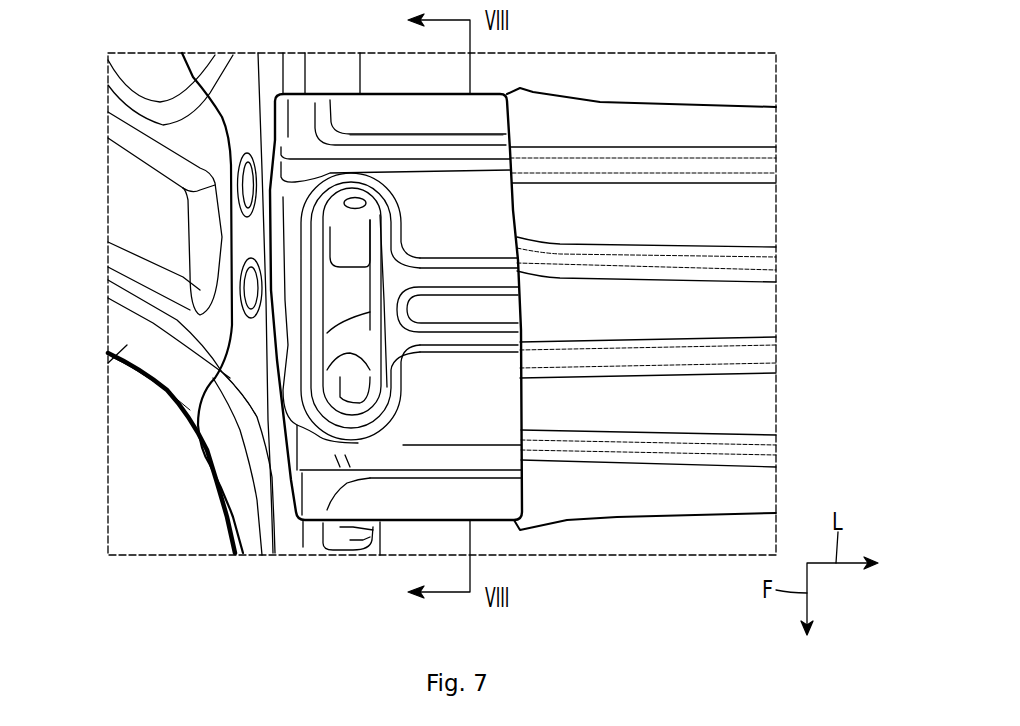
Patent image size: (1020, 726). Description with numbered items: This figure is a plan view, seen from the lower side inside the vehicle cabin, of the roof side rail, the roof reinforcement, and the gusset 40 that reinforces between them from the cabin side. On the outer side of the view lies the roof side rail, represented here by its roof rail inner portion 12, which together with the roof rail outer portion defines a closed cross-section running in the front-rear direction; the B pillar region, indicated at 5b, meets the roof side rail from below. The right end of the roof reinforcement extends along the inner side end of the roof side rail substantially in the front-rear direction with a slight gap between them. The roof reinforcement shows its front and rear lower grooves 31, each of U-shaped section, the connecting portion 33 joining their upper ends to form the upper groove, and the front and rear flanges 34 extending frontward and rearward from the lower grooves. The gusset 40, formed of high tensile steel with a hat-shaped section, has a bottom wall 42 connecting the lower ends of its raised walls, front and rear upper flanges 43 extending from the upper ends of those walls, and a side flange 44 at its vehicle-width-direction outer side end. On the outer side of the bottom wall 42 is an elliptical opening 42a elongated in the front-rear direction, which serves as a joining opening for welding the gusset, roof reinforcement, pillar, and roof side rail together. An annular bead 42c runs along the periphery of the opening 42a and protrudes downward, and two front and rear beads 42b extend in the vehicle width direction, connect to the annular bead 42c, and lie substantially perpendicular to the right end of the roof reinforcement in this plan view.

The side sill (body panel 5) 5b is at (108, 368).
The roof rail inner portion 12 is at (233, 487).
The lower groove 31 is at (737, 220).
The connecting portion 33 is at (737, 313).
The flange 34 is at (600, 123).
The gusset 40 is at (336, 92).
The bottom wall 42 is at (497, 239).
The opening 42a is at (378, 208).
The bead 42b is at (460, 275).
The annular bead 42c is at (372, 420).
The upper flange 43 is at (420, 117).
The side flange 44 is at (282, 363).